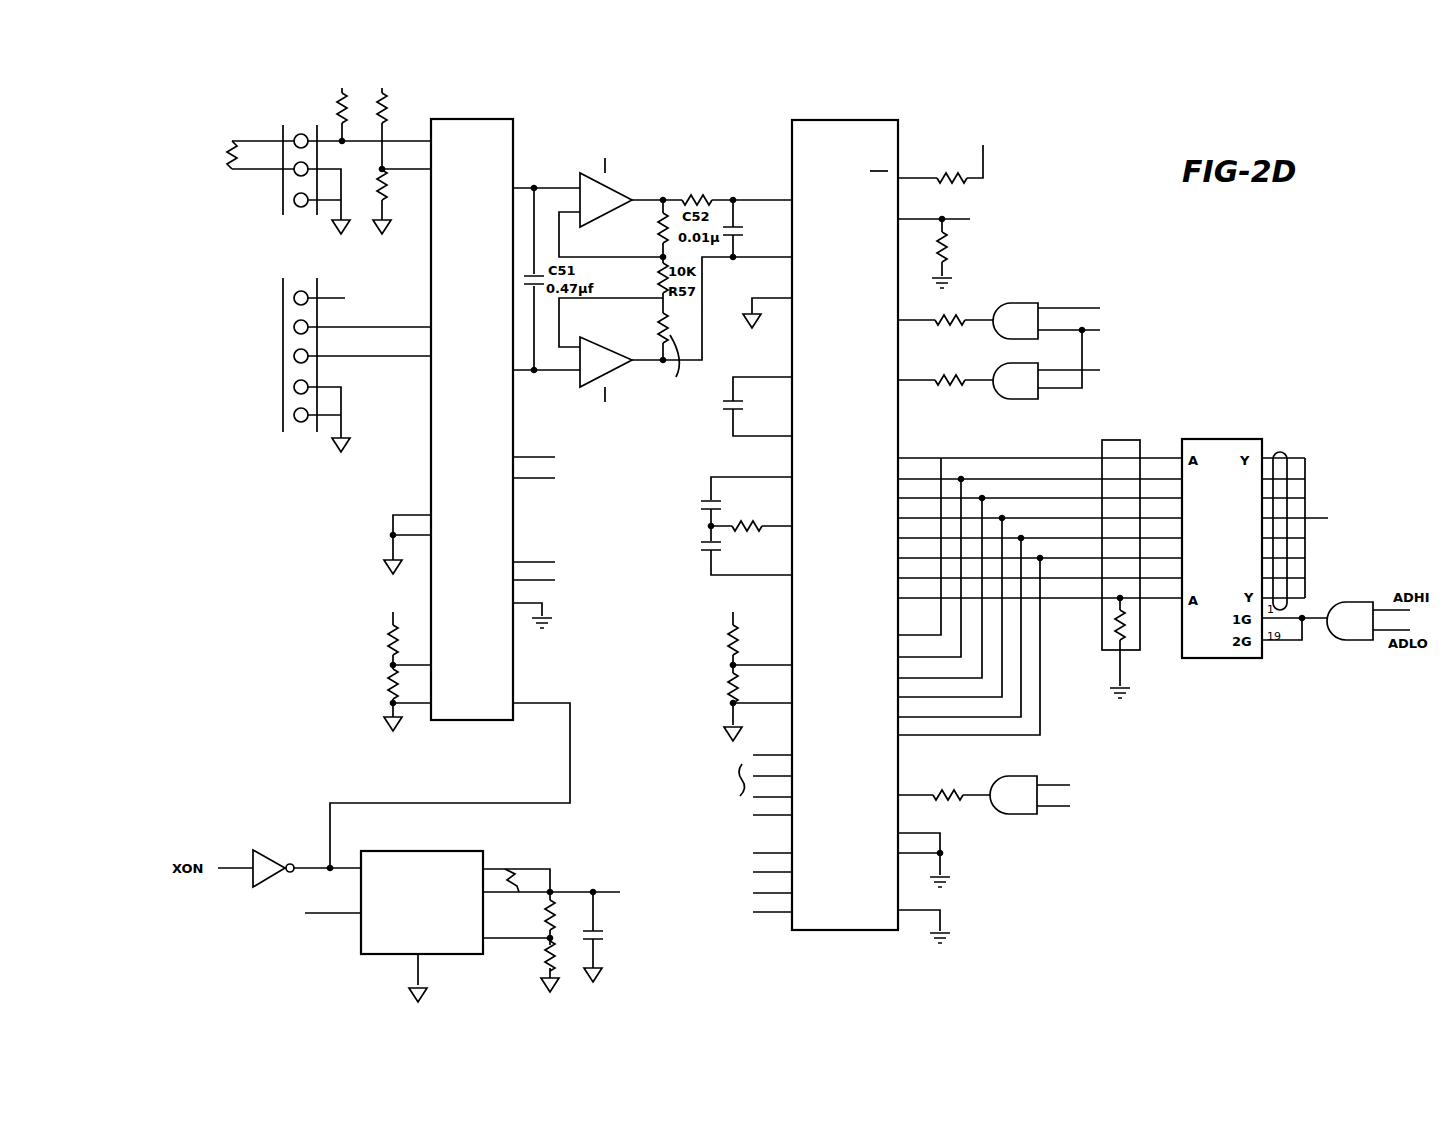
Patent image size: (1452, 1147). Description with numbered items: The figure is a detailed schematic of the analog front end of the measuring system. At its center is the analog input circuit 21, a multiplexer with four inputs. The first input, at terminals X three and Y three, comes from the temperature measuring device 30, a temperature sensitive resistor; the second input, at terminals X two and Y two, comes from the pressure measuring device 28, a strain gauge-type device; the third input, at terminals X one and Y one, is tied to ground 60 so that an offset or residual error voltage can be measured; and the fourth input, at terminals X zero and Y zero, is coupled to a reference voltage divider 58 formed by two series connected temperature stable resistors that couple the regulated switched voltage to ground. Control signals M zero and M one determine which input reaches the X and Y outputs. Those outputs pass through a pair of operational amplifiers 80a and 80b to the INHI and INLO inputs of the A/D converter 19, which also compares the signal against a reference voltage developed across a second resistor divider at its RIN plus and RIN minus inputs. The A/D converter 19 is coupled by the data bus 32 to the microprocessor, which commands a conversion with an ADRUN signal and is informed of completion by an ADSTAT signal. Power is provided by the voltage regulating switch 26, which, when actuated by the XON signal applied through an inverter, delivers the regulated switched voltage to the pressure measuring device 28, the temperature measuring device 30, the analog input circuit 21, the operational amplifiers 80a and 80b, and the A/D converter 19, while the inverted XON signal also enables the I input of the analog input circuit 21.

The A/D converter 19 is at (852, 120).
The analog input circuit 21 is at (500, 121).
The voltage regulating switch 26 is at (432, 862).
The pressure measuring device 28 is at (200, 430).
The temperature measuring device 30 is at (205, 133).
The data bus 32 is at (1282, 452).
The reference voltage divider 58 is at (387, 618).
The input short connection 60 is at (391, 528).
The operational amplifier 80a is at (621, 194).
The operational amplifier 80b is at (611, 351).